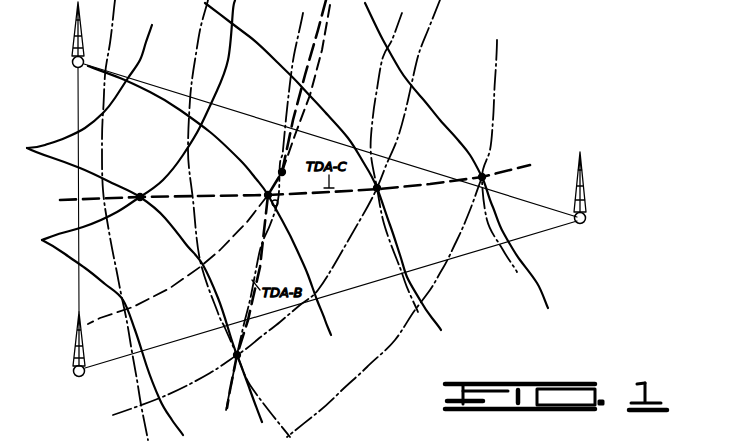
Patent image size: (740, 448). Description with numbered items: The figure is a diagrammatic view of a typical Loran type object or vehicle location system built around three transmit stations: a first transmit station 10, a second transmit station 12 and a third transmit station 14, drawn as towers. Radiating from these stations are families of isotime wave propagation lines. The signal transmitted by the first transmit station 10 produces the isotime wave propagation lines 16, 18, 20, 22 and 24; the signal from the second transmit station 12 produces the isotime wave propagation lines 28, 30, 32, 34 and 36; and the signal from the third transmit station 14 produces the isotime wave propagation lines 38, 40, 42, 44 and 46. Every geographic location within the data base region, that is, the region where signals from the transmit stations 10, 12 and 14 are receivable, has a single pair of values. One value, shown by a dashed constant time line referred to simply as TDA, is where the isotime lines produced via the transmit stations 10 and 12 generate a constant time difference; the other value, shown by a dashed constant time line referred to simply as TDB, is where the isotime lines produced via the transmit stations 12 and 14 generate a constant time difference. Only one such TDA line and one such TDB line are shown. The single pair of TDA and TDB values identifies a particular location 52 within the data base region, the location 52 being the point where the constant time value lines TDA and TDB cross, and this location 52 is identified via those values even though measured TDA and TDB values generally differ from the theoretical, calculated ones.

The first transmit station 10 is at (72, 340).
The second transmit station 12 is at (72, 30).
The third transmit station 14 is at (587, 181).
The isotime wave propagation line 16 is at (85, 267).
The isotime wave propagation line 18 is at (167, 225).
The isotime wave propagation line 20 is at (240, 160).
The isotime wave propagation line 22 is at (324, 112).
The isotime wave propagation line 24 is at (432, 88).
The isotime wave propagation line 28 is at (98, 78).
The isotime wave propagation line 30 is at (227, 67).
The isotime wave propagation line 32 is at (320, 30).
The isotime wave propagation line 34 is at (417, 33).
The isotime wave propagation line 36 is at (453, 243).
The isotime wave propagation line 38 is at (490, 63).
The isotime wave propagation line 40 is at (381, 70).
The isotime wave propagation line 42 is at (293, 40).
The isotime wave propagation line 44 is at (191, 72).
The isotime wave propagation line 46 is at (110, 43).
The location 52 is at (263, 220).